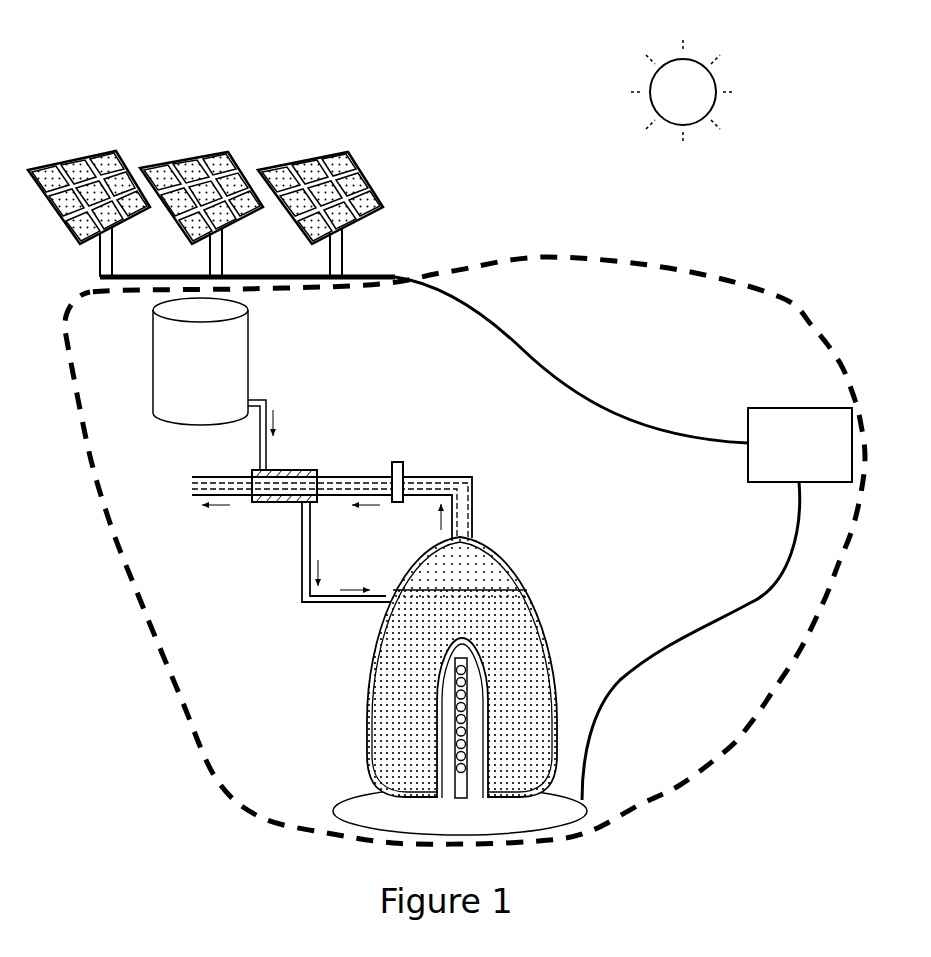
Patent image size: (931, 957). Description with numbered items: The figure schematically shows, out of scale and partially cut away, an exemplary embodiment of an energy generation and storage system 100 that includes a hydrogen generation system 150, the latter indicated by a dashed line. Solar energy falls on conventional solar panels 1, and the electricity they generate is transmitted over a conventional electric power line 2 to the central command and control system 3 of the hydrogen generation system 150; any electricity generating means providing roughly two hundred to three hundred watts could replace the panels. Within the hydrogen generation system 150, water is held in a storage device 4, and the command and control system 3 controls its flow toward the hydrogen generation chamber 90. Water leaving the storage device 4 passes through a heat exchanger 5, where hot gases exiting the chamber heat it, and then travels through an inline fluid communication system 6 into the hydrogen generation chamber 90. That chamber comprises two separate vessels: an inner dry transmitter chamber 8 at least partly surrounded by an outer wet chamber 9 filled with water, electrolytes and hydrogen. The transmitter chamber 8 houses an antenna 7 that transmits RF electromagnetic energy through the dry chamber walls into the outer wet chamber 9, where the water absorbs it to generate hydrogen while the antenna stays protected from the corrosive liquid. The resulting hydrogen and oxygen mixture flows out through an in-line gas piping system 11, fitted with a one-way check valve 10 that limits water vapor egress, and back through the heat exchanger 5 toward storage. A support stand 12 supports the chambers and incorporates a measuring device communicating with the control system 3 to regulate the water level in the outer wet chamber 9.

The energy generation and storage system 100 is at (452, 105).
The solar panels 1 is at (120, 135).
The electric power line 2 is at (520, 330).
The central command and control system 3 is at (752, 394).
The storage device 4 is at (150, 355).
The heat exchanger 5 is at (282, 466).
The inline fluid communication system 6 is at (292, 545).
The antenna 7 is at (463, 691).
The transmitter chamber 8 is at (488, 720).
The outer wet chamber 9 is at (365, 655).
The valve 10 is at (390, 452).
The in-line gas piping system 11 is at (450, 465).
The support stand 12 is at (357, 810).
The hydrogen generation chamber 90 is at (453, 644).
The hydrogen generation system 150 is at (698, 268).